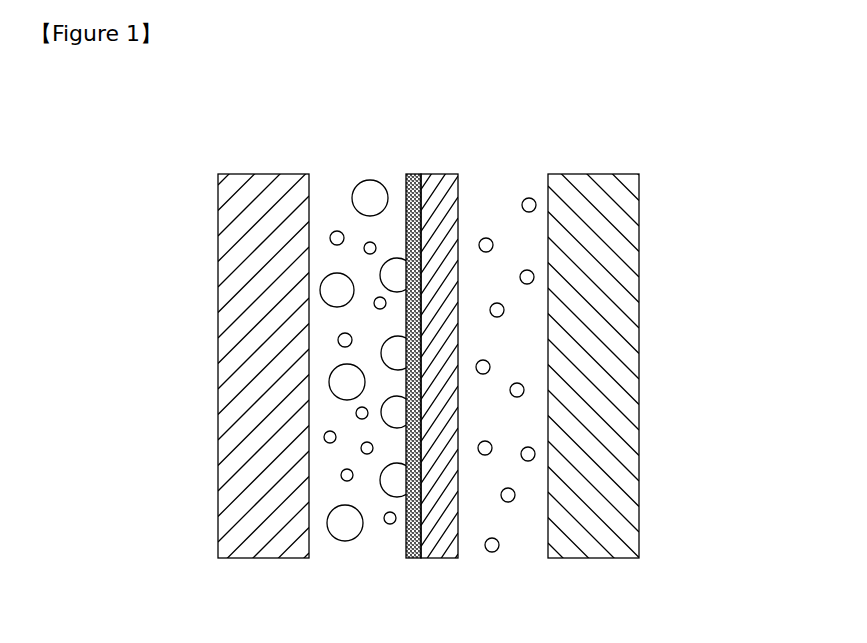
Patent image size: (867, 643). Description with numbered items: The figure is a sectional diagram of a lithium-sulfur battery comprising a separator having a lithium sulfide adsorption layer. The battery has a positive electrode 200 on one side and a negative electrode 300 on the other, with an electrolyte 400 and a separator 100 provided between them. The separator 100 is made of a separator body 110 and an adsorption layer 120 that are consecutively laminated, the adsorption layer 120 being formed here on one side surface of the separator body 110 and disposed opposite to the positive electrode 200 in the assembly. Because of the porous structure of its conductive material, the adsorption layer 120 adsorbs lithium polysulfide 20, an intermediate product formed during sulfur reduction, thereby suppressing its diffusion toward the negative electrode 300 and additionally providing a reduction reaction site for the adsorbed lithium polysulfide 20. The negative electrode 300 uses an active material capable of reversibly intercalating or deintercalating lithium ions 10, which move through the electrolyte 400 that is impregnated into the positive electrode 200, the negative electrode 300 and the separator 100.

The separator 100 is at (432, 355).
The separator body 110 is at (442, 175).
The adsorption layer 120 is at (416, 175).
The positive electrode 200 is at (249, 371).
The negative electrode 300 is at (615, 370).
The electrolyte 400 is at (430, 380).
The lithium ion 10 is at (486, 237).
The lithium polysulfide 20 is at (362, 194).